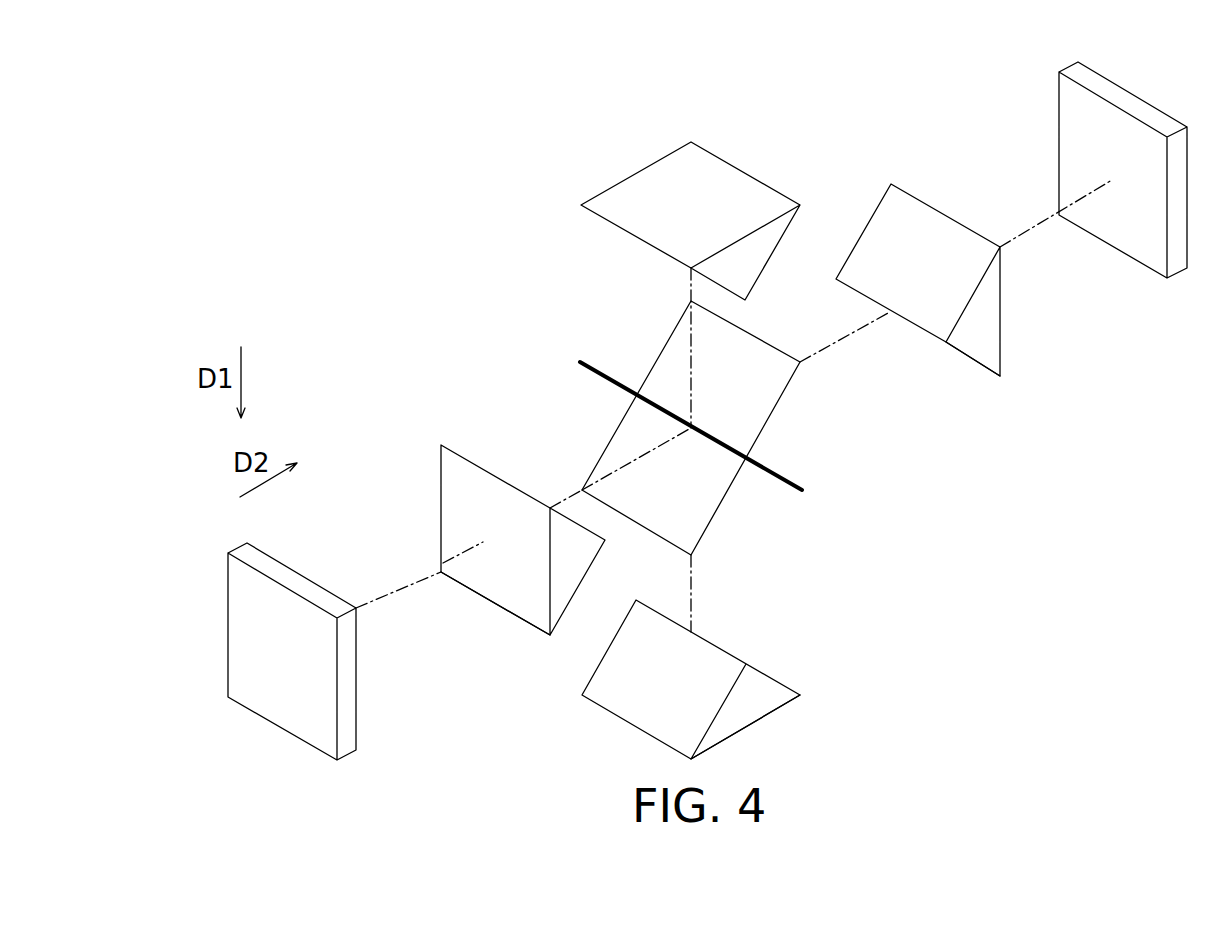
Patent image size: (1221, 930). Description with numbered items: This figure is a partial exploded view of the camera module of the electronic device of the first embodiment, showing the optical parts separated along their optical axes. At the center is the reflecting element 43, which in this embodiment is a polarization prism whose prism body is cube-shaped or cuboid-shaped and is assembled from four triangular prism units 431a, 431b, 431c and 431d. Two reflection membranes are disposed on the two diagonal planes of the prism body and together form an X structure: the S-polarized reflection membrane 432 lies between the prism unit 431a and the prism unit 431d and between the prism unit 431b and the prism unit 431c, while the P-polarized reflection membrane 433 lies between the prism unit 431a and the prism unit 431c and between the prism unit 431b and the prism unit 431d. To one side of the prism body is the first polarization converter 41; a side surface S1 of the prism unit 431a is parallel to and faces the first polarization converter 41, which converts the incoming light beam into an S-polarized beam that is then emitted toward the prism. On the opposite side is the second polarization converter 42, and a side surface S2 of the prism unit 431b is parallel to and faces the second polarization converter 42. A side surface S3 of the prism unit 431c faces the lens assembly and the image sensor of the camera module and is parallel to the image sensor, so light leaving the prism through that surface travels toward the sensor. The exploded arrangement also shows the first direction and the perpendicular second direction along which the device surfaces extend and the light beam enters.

The first polarization converter 41 is at (240, 547).
The second polarization converter 42 is at (1130, 92).
The reflecting element 43 is at (536, 242).
The prism unit 431a is at (432, 461).
The prism unit 431b is at (947, 205).
The prism unit 431c is at (775, 667).
The prism unit 431d is at (634, 160).
The S-polarized reflection membrane 432 is at (775, 470).
The P-polarized reflection membrane 433 is at (777, 418).
The side surface S1 is at (508, 582).
The side surface S2 is at (1002, 312).
The side surface S3 is at (745, 730).